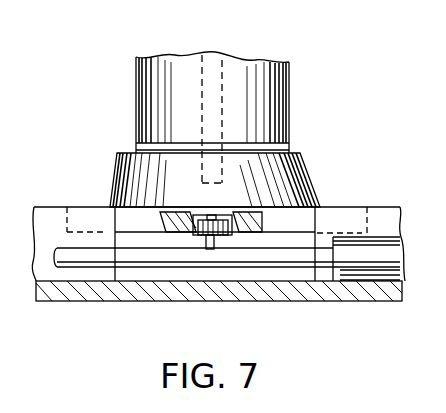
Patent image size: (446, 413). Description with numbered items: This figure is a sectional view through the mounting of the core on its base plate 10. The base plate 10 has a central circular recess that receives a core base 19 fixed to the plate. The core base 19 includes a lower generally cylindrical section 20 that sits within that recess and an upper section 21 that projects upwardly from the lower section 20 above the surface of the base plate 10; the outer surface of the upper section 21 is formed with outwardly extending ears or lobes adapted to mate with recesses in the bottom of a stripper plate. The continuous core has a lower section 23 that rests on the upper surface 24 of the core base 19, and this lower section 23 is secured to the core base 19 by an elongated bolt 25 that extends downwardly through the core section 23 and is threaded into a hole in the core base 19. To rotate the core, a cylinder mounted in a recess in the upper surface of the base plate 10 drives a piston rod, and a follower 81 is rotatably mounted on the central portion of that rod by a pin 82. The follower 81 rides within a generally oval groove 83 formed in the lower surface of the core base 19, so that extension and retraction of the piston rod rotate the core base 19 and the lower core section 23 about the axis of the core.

The base plate 10 is at (297, 301).
The core base 19 is at (318, 170).
The lower generally cylindrical section 20 is at (82, 207).
The upper section 21 is at (118, 168).
The lower section 23 is at (288, 96).
The upper surface 24 is at (305, 157).
The elongated bolt 25 is at (213, 65).
The follower 81 is at (216, 243).
The pin 82 is at (206, 243).
The generally oval groove 83 is at (208, 212).